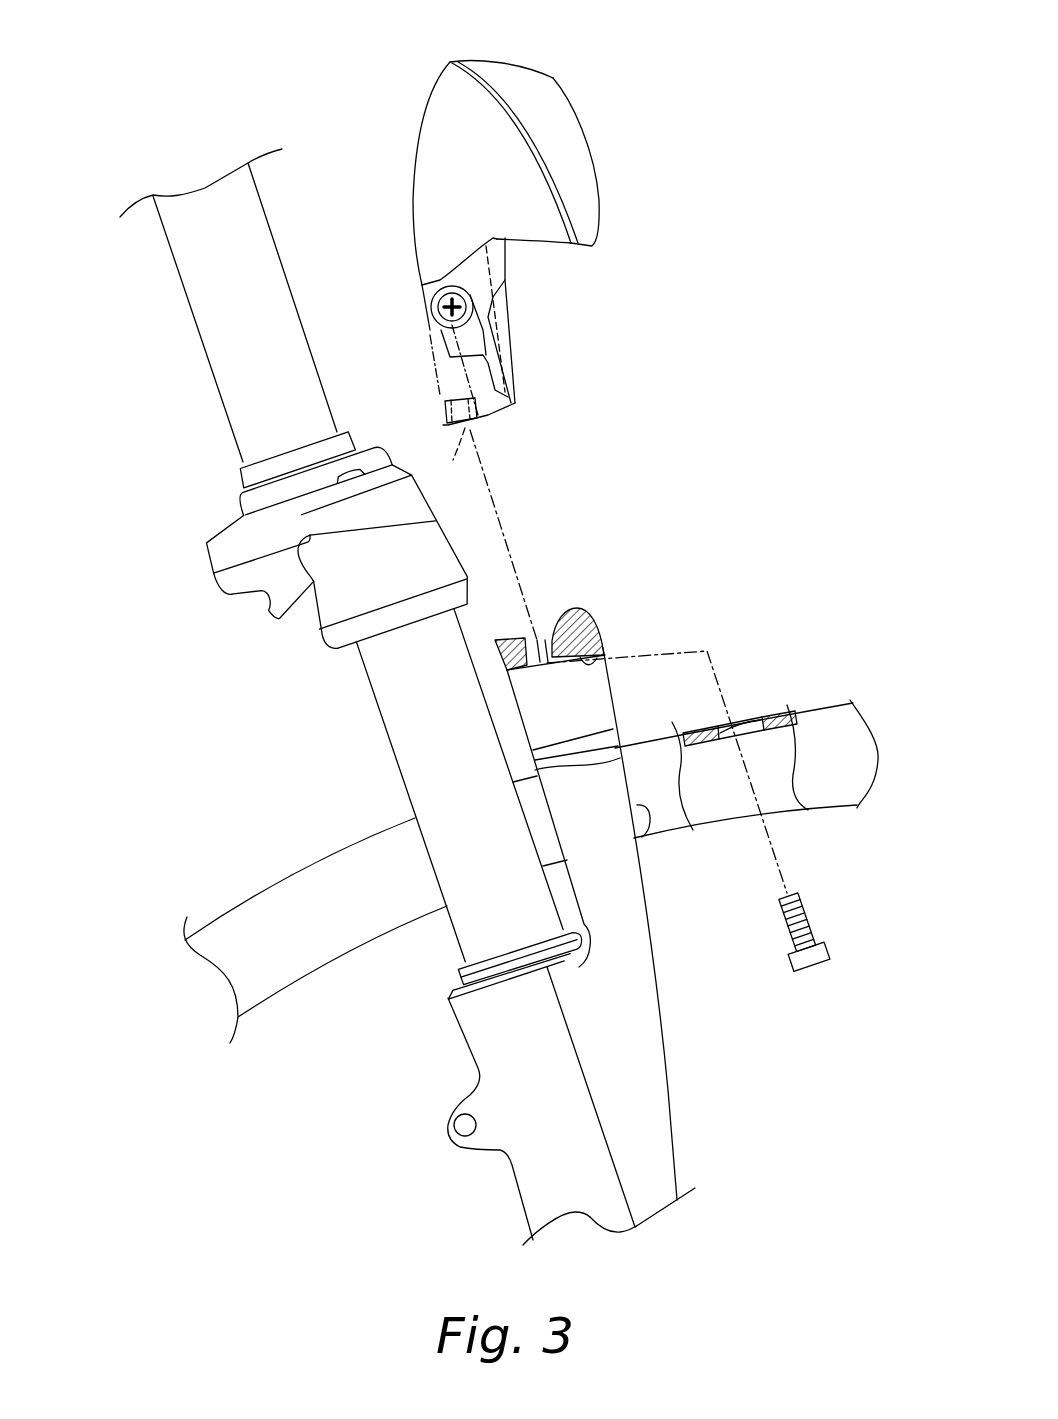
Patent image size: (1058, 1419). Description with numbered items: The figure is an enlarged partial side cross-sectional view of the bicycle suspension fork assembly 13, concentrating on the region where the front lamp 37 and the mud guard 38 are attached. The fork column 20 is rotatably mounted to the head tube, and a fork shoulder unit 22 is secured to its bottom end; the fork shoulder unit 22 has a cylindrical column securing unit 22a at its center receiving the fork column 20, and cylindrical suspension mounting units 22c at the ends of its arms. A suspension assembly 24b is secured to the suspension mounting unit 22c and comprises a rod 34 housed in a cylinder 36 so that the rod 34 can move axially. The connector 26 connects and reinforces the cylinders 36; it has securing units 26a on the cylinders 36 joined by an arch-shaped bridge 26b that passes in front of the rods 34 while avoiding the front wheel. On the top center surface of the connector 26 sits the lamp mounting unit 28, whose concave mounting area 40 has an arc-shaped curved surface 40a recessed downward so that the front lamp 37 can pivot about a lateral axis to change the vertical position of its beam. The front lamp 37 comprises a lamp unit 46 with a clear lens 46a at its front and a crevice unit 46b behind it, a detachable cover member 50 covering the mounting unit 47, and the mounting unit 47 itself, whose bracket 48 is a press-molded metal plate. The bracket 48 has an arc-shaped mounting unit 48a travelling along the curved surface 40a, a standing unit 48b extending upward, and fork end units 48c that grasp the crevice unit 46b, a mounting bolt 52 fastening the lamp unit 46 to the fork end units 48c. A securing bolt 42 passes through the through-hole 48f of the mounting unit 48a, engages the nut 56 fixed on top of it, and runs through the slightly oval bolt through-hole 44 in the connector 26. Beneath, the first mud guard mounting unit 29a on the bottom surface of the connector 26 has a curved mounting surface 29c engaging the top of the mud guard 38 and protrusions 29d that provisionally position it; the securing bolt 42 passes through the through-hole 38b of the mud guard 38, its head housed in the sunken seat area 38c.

The bicycle suspension fork assembly 13 is at (264, 596).
The fork column 20 is at (262, 235).
The fork shoulder unit 22 is at (306, 552).
The column securing unit 22a is at (296, 459).
The suspension mounting unit 22c is at (268, 589).
The suspension assembly 24b is at (479, 1176).
The connector 26 is at (565, 875).
The securing unit 26a is at (643, 1105).
The bridge 26b is at (649, 835).
The lamp mounting unit 28 is at (565, 708).
The first mud guard mounting unit 29a is at (527, 679).
The curved mounting surface 29c is at (575, 665).
The protrusions 29d is at (595, 738).
The rod 34 is at (372, 703).
The cylinder 36 is at (499, 1087).
The front lamp 37 is at (563, 158).
The mud guard 38 is at (746, 750).
The through-hole 38b is at (745, 720).
The sunken seat area 38c is at (752, 735).
The concave mounting area 40 is at (541, 612).
The arc-shaped curved surface 40a is at (505, 637).
The securing bolt 42 is at (812, 968).
The bolt through-hole 44 is at (573, 630).
The lamp unit 46 is at (568, 136).
The clear lens 46a is at (593, 184).
The crevice unit 46b is at (479, 260).
The mounting unit 47 is at (503, 439).
The bracket 48 is at (480, 365).
The mounting unit 48a is at (505, 429).
The standing unit 48b is at (492, 367).
The fork end units 48c is at (445, 333).
The through-hole 48f is at (450, 460).
The cover member 50 is at (493, 308).
The mounting bolt 52 is at (432, 299).
The nut 56 is at (443, 410).